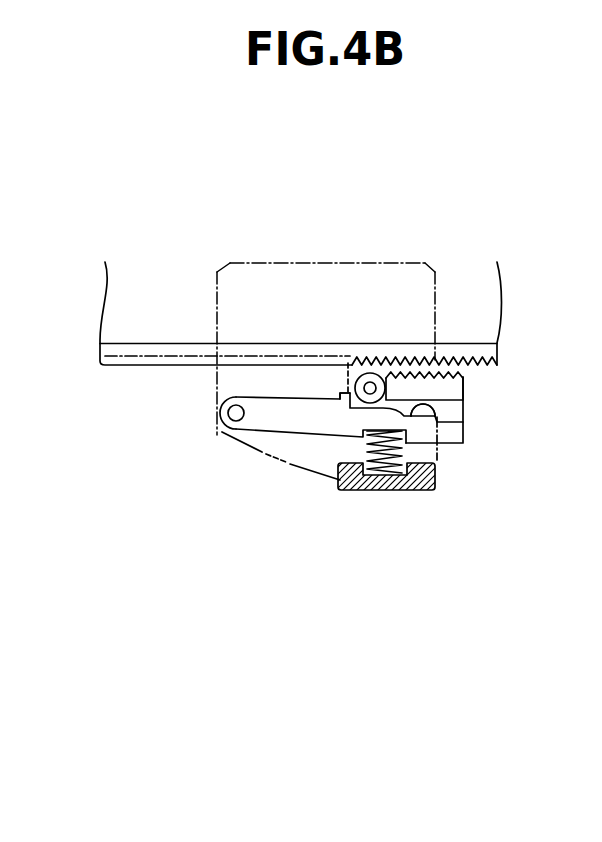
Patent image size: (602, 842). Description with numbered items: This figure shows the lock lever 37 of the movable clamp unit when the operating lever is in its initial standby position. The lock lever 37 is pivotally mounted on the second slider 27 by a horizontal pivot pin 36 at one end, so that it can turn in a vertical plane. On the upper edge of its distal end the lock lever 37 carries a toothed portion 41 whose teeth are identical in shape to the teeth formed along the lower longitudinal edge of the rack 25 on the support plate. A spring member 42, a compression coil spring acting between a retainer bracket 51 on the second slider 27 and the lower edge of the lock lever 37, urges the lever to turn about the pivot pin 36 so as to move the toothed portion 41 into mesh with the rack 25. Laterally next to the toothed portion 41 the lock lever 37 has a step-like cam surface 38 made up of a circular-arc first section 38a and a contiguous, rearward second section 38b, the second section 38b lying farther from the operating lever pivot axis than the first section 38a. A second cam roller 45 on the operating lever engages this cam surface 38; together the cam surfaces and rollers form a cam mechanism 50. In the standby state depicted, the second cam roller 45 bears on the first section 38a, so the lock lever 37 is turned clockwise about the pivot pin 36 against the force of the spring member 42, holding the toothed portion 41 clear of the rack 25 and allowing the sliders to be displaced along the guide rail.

The rack 25 is at (493, 368).
The second slider 27 is at (338, 262).
The pivot pin 36 is at (225, 440).
The lock lever 37 is at (282, 423).
The cam surface 38 is at (440, 417).
The first section 38a is at (372, 387).
The second section 38b is at (465, 412).
The toothed portion 41 is at (465, 388).
The spring member 42 is at (373, 450).
The second cam roller 45 is at (348, 375).
The cam mechanism 50 is at (338, 415).
The retainer bracket 51 is at (392, 490).